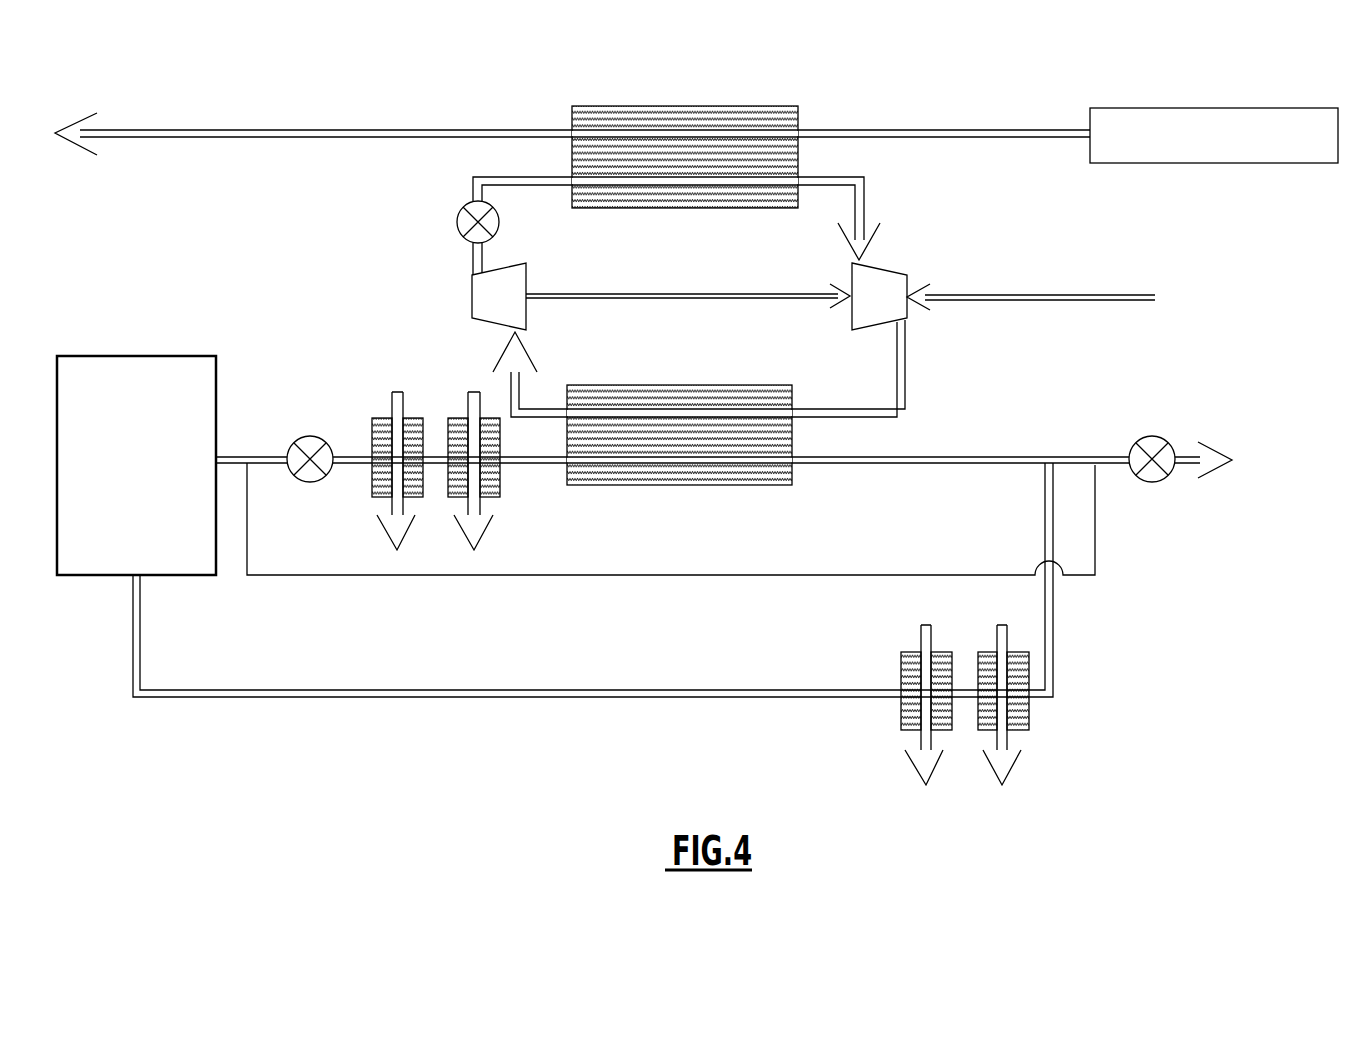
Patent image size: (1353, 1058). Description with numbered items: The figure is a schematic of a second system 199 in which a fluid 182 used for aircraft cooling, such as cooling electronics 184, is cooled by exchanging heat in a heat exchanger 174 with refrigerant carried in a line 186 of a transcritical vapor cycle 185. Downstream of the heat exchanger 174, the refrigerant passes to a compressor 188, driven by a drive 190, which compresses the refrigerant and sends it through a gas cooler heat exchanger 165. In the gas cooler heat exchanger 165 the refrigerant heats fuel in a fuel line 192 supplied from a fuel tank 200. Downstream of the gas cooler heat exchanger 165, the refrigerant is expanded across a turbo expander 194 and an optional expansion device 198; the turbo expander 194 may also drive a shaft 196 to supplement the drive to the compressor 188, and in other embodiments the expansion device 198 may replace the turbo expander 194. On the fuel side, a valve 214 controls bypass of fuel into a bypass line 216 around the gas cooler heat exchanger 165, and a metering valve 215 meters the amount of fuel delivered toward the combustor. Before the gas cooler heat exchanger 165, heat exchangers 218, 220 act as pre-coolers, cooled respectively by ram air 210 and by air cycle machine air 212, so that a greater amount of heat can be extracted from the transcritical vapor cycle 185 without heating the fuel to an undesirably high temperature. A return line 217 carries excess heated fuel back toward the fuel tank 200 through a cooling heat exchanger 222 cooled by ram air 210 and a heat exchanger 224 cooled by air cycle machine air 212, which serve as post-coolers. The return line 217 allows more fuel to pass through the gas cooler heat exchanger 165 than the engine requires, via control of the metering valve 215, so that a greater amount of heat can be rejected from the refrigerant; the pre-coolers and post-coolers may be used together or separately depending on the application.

The gas cooler heat exchanger 165 is at (712, 395).
The heat exchanger 174 is at (688, 128).
The fluid 182 is at (402, 128).
The electronics 184 is at (1280, 163).
The transcritical vapor cycle 185 is at (982, 240).
The refrigerant line 186 is at (866, 205).
The compressor 188 is at (868, 320).
The drive 190 is at (1030, 300).
The fuel line 192 is at (920, 457).
The turbo expander 194 is at (522, 281).
The shaft 196 is at (745, 294).
The expansion device 198 is at (458, 220).
The system 199 is at (168, 256).
The fuel tank 200 is at (122, 380).
The ram air 210 is at (385, 509).
The air cycle machine air 212 is at (478, 508).
The valve 214 is at (305, 436).
The metering valve 215 is at (1148, 436).
The bypass line 216 is at (680, 573).
The return line 217 is at (700, 697).
The heat exchanger 218 is at (378, 418).
The heat exchanger 220 is at (456, 418).
The cooling heat exchanger 222 is at (908, 652).
The heat exchanger 224 is at (985, 652).